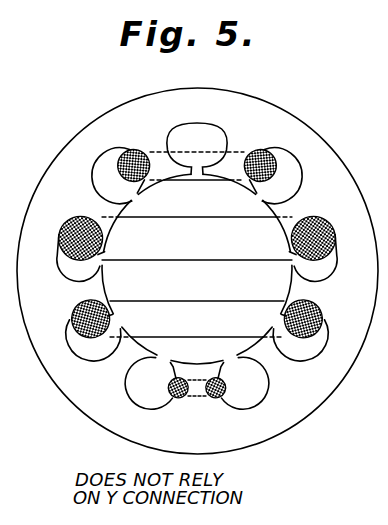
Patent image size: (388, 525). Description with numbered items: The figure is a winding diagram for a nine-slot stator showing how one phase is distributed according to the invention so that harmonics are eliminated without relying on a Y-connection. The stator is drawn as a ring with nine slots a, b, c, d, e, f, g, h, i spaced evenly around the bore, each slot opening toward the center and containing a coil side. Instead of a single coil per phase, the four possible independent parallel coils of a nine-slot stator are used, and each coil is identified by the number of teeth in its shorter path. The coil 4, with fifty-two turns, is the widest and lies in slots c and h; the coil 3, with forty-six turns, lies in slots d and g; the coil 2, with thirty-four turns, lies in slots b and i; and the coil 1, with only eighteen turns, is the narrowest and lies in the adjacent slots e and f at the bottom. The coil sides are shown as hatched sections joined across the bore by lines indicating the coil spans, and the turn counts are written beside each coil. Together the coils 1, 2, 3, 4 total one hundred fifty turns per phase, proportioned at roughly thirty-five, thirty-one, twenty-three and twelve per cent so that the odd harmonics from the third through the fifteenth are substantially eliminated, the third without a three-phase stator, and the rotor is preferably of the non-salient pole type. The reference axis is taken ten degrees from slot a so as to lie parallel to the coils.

The stator slot a is at (197, 134).
The stator slot b is at (117, 175).
The stator slot c is at (70, 259).
The stator slot d is at (89, 335).
The stator slot e is at (151, 392).
The stator slot f is at (243, 393).
The stator slot g is at (301, 335).
The stator slot h is at (327, 259).
The stator slot i is at (278, 177).
The coil N1 1 is at (198, 398).
The coil N2 2 is at (197, 165).
The coil N3 3 is at (197, 319).
The coil N4 4 is at (197, 238).